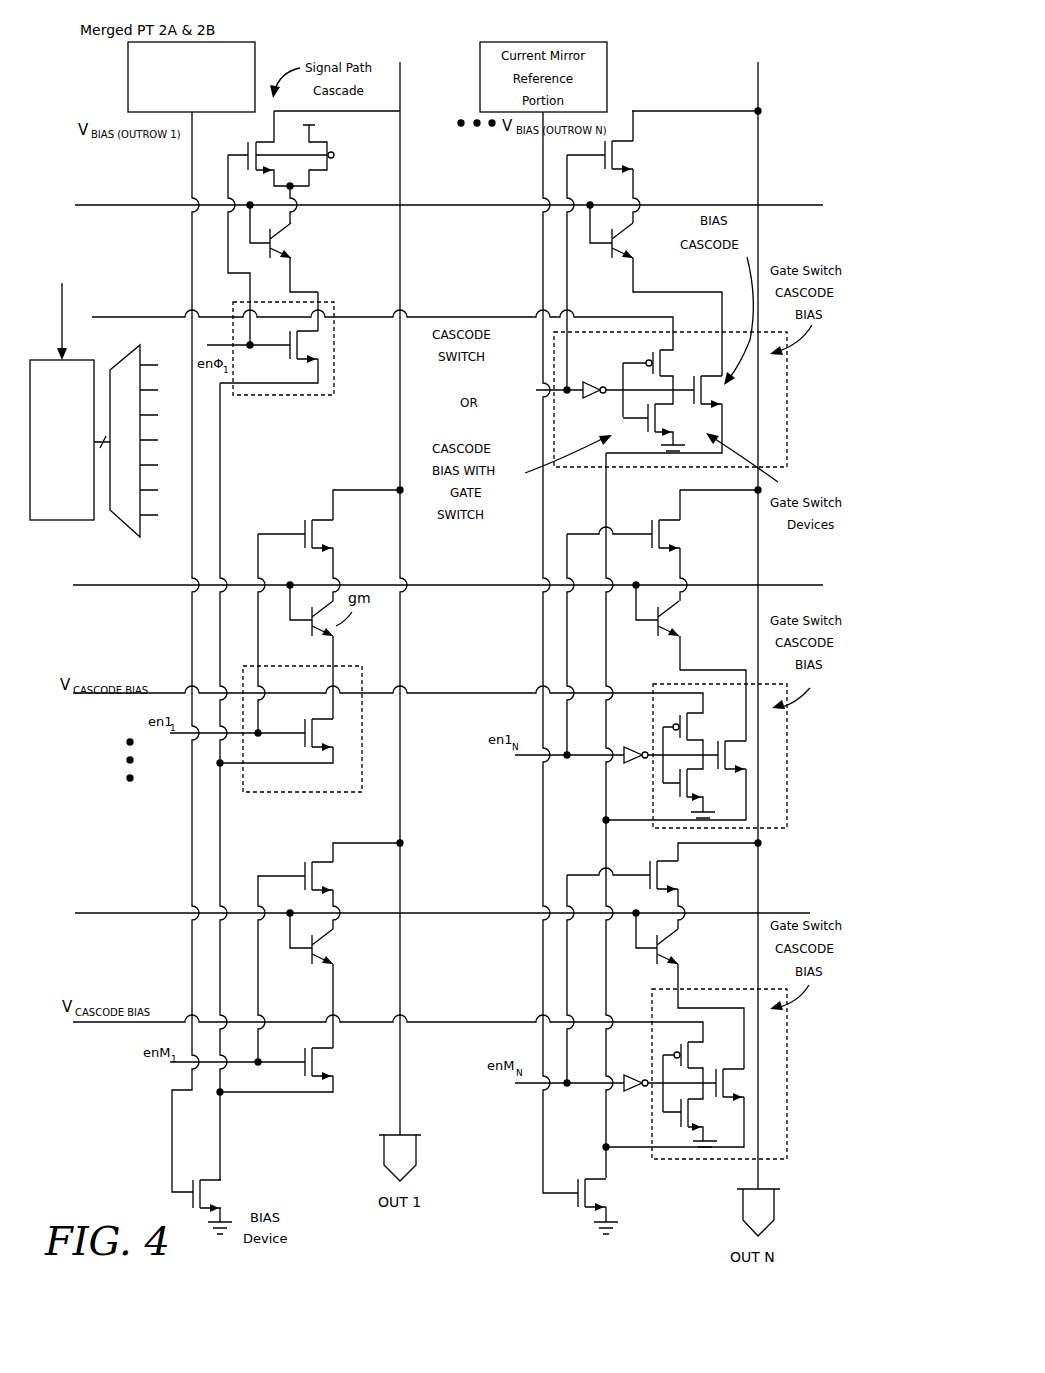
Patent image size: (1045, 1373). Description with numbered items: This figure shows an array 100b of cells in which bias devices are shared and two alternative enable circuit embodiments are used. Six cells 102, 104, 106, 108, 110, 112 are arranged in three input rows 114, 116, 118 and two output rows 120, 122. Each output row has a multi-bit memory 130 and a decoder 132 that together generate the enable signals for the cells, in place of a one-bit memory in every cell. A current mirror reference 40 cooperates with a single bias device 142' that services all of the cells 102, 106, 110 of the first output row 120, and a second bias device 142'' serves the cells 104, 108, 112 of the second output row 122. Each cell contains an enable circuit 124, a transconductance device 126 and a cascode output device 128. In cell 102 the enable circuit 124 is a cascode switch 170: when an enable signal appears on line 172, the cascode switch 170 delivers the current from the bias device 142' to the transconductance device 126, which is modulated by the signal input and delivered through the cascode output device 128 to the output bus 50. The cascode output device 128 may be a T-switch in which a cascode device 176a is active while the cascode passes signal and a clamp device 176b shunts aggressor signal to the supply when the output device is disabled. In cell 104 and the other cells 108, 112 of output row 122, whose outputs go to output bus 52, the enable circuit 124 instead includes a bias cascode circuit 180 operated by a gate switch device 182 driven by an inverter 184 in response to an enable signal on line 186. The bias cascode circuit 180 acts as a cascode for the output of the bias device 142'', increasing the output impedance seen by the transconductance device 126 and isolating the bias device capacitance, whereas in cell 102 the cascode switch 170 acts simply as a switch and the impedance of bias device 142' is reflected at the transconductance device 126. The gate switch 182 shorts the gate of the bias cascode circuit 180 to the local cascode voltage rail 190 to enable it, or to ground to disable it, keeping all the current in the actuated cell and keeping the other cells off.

The current mirror reference 40 is at (128, 68).
The output bus 50 is at (400, 78).
The output bus 52 is at (759, 78).
The array 100b is at (822, 58).
The cell 102 is at (278, 440).
The cell 104 is at (645, 501).
The cell 106 is at (327, 825).
The cell 108 is at (645, 805).
The cell 110 is at (308, 1148).
The cell 112 is at (673, 1186).
The input row 114 is at (86, 252).
The input row 116 is at (86, 745).
The input row 118 is at (86, 1078).
The output row 120 is at (269, 60).
The output row 122 is at (622, 60).
The enable circuit 124 is at (296, 396).
The transconductance device 126 is at (294, 240).
The cascode output device 128 is at (633, 153).
The multi-bit memory 130 is at (66, 537).
The decoder 132 is at (142, 528).
The bias device 142' is at (237, 1207).
The bias device 142'' is at (572, 1206).
The cascode switch 170 is at (316, 343).
The line 172 is at (212, 340).
The cascode device 176a is at (262, 143).
The clamp device 176b is at (315, 143).
The bias cascode circuit 180 is at (712, 392).
The gate switch device 182 is at (633, 342).
The inverter 184 is at (592, 380).
The line 186 is at (548, 393).
The local cascode voltage rail 190 is at (456, 317).